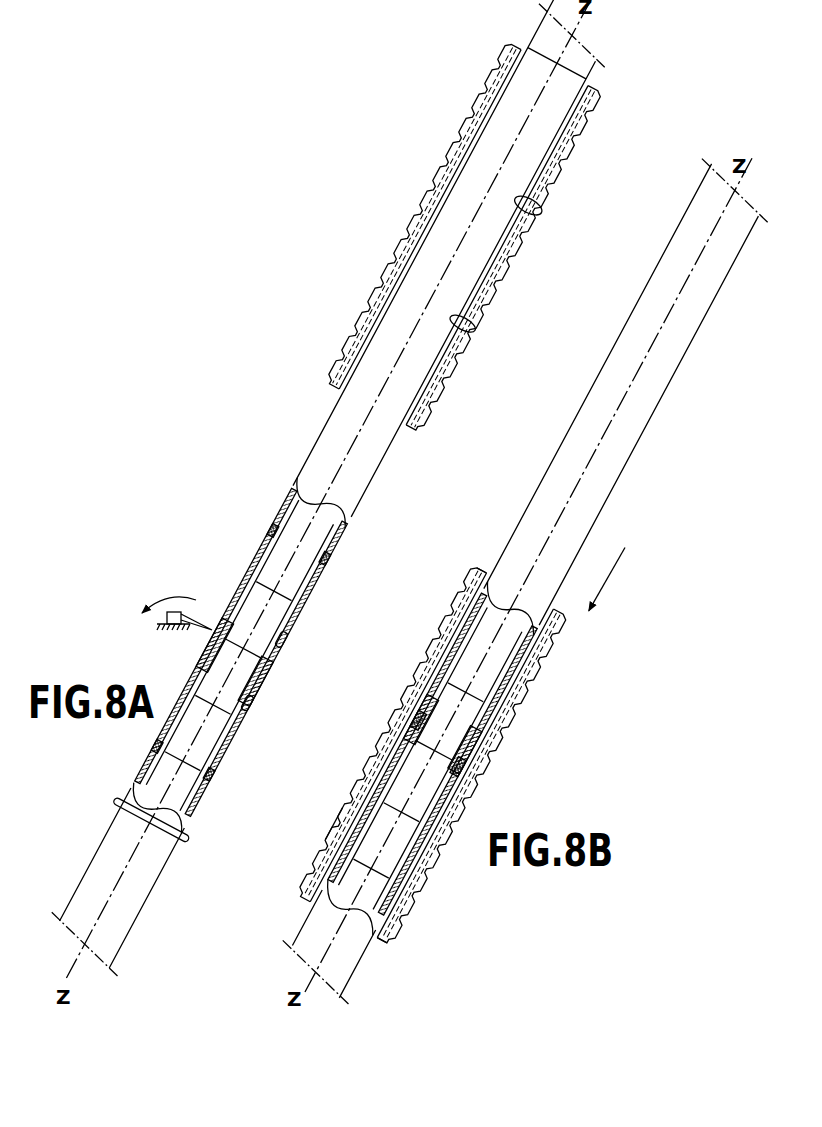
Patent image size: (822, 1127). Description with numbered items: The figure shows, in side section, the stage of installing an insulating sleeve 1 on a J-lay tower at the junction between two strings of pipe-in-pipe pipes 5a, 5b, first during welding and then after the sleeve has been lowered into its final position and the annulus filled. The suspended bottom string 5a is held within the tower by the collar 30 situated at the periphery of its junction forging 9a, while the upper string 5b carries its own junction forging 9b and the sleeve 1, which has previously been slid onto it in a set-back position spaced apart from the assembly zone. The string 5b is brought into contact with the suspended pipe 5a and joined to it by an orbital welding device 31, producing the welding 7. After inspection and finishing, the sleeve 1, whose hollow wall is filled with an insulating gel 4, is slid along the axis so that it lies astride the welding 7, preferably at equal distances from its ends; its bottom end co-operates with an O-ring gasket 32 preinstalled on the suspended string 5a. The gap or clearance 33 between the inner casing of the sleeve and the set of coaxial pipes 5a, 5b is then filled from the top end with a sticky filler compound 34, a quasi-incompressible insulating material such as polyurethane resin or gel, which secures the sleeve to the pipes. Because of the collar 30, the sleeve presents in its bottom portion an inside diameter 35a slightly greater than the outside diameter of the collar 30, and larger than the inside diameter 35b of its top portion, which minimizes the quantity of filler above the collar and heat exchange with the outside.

In FIG. 8A, the insulating sleeve 1 is at (421, 153).
In FIG. 8B, the insulating sleeve 1 is at (446, 884).
In FIG. 8A, the insulating gel 4 is at (393, 262).
In FIG. 8A, the suspended bottom string 5a is at (142, 904).
In FIG. 8B, the suspended bottom string 5a is at (310, 931).
In FIG. 8A, the top string 5b is at (376, 458).
In FIG. 8B, the top string 5b is at (636, 436).
In FIG. 8A, the welding 7 is at (279, 664).
In FIG. 8B, the welding 7 is at (468, 770).
In FIG. 8A, the junction forging 9a is at (262, 742).
In FIG. 8A, the junction forging 9b is at (290, 650).
In FIG. 8A, the collar 30 is at (205, 636).
In FIG. 8A, the orbital welding device 31 is at (188, 603).
In FIG. 8A, the O-ring gasket 32 is at (190, 831).
In FIG. 8B, the O-ring gasket 32 is at (376, 950).
In FIG. 8B, the gap or clearance 33 is at (342, 822).
In FIG. 8B, the sticky filler compound 34 is at (492, 558).
In FIG. 8A, the inside diameter of the bottom portion of the sleeve 35a is at (473, 328).
In FIG. 8A, the inside diameter of the top portion of the sleeve 35b is at (550, 204).